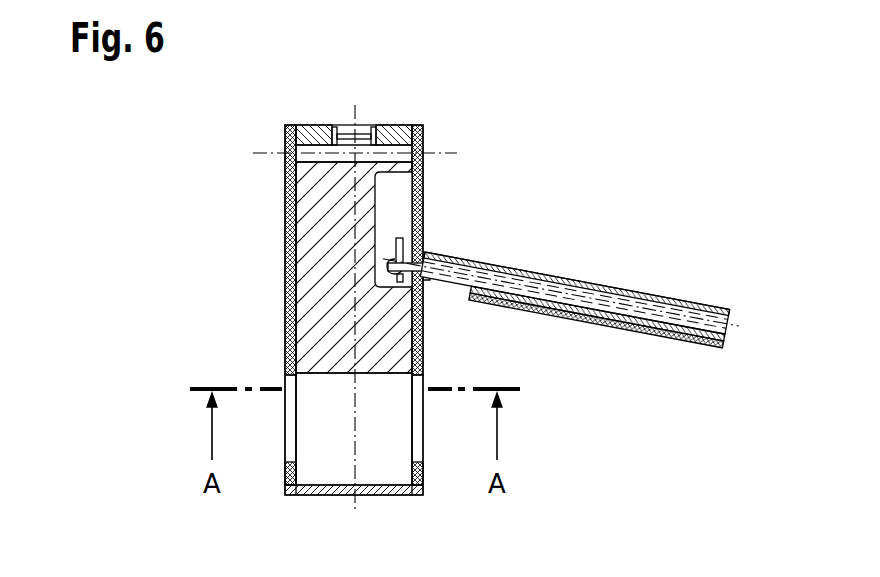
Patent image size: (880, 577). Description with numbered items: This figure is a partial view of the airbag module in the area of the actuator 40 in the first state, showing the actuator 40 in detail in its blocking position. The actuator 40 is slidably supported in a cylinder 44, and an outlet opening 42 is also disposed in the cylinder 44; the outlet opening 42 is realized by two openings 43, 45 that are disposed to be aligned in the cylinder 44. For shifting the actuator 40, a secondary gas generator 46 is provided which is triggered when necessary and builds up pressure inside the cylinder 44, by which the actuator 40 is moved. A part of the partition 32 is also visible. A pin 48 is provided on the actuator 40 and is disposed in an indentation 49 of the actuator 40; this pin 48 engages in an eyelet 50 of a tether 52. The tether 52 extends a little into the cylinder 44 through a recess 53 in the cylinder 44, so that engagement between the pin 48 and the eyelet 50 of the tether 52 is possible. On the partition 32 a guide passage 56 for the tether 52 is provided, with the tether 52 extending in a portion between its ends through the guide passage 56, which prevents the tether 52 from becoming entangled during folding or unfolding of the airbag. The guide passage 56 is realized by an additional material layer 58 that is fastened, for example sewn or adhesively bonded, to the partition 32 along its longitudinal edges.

The partition 32 is at (608, 287).
The actuator 40 is at (317, 278).
The outlet opening 42 is at (335, 438).
The opening 43 is at (290, 443).
The cylinder 44 is at (286, 220).
The opening 45 is at (418, 445).
The secondary gas generator 46 is at (345, 128).
The pin 48 is at (424, 223).
The indentation 49 is at (402, 192).
The eyelet 50 is at (427, 238).
The tether 52 is at (599, 303).
The recess 53 is at (432, 280).
The guide passage 56 is at (642, 328).
The additional material layer 58 is at (690, 338).